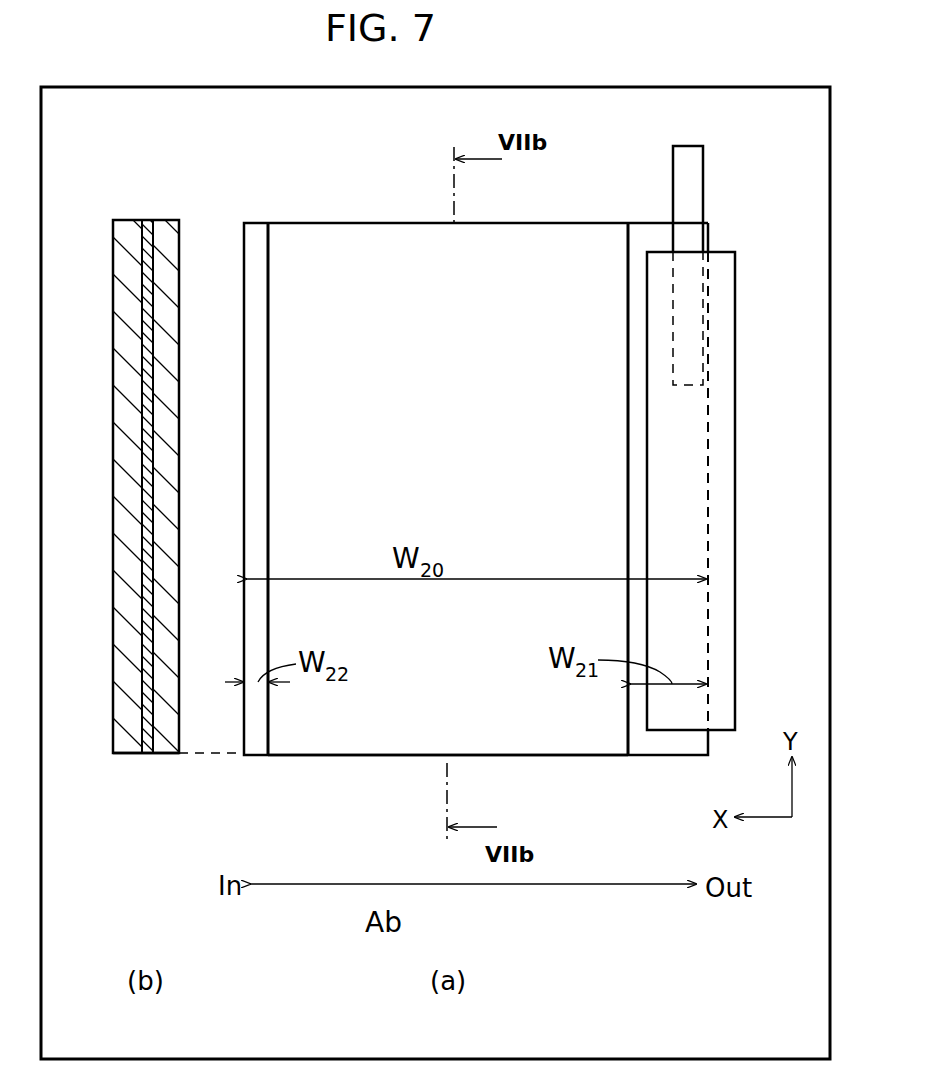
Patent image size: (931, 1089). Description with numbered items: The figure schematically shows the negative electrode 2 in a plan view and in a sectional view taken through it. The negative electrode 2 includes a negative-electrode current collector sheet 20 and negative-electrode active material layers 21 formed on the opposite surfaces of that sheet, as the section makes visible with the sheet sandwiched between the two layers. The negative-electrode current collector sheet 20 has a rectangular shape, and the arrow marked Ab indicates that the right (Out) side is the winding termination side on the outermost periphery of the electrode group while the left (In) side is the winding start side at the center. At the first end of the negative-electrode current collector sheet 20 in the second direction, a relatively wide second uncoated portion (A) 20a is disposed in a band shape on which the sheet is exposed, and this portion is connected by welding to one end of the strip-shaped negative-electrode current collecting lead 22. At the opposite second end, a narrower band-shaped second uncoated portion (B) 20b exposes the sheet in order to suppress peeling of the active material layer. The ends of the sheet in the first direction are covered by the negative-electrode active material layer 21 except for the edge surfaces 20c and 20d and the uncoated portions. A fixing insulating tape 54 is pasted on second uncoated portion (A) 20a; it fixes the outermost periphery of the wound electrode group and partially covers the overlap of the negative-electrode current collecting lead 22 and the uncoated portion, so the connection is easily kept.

The negative electrode 2 is at (365, 125).
The negative-electrode current collector sheet 20 is at (150, 602).
The second uncoated portion (A) 20a is at (657, 745).
The second uncoated portion (B) 20b is at (257, 745).
The edge surface 20c is at (151, 218).
The edge surface 20d is at (146, 757).
The negative-electrode active material layer 21 is at (118, 750).
The negative-electrode current collecting lead 22 is at (687, 183).
The fixing insulating tape 54 is at (725, 358).